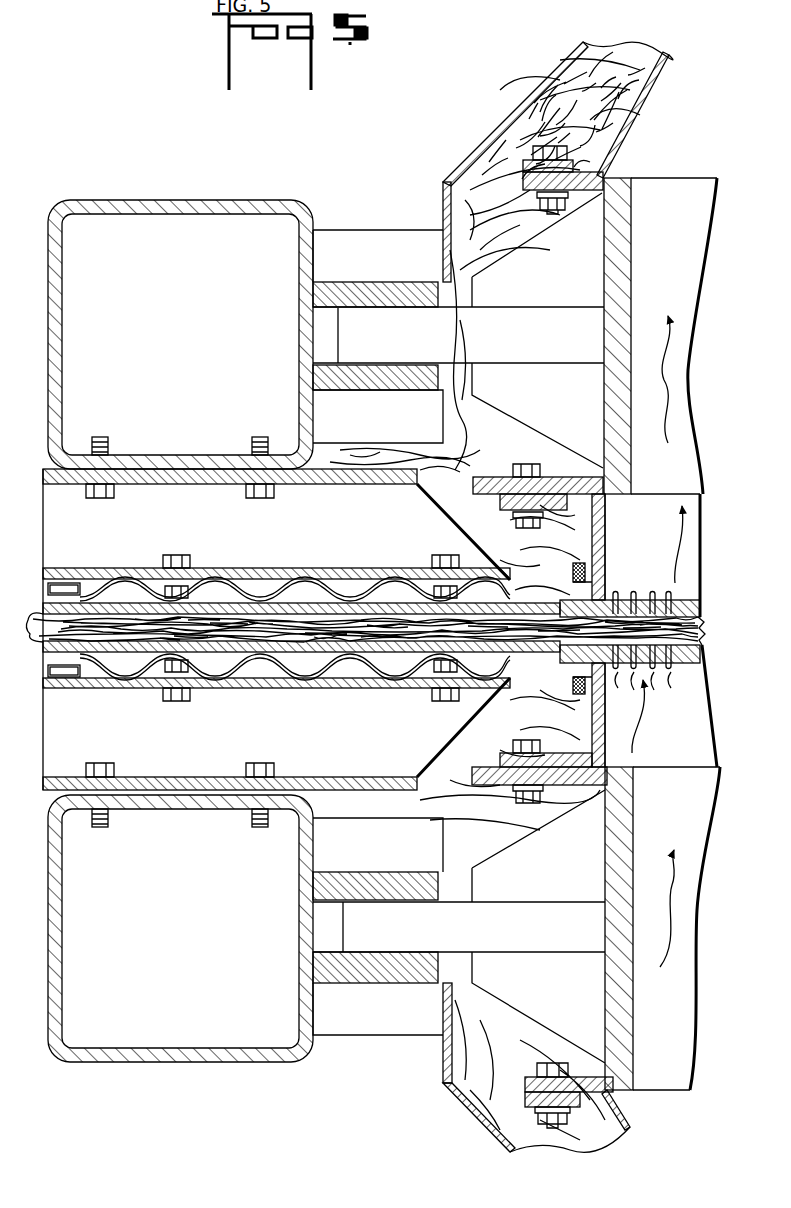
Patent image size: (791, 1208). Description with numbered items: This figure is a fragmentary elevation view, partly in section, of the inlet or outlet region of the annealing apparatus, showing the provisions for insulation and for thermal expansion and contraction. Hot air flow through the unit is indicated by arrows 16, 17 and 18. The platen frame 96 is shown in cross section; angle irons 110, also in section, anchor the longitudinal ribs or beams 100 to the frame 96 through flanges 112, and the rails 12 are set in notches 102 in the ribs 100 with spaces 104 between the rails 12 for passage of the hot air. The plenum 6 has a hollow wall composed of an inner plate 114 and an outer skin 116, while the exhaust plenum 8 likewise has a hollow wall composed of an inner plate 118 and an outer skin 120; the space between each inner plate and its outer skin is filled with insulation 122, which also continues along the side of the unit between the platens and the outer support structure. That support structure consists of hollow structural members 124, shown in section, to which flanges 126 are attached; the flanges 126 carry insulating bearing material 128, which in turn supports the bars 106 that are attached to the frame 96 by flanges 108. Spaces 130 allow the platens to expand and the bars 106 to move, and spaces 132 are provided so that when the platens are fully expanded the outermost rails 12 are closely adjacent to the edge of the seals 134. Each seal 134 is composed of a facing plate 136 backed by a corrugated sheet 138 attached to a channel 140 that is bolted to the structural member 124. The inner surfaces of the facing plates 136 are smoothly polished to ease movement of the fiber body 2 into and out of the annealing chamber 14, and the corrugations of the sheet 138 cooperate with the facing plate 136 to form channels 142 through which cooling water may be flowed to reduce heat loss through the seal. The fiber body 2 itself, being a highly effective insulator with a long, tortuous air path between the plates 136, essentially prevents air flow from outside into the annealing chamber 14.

The fiber body 2 is at (322, 639).
The plenum 6 is at (673, 1129).
The exhaust plenum 8 is at (681, 134).
The rails 12 is at (668, 610).
The annealing chamber 14 is at (707, 625).
The arrow 16 is at (672, 921).
The arrow 17 is at (684, 540).
The arrow 18 is at (666, 372).
The frame 96 is at (632, 277).
The longitudinal ribs 100 is at (675, 552).
The notches 102 is at (675, 668).
The spaces 104 is at (643, 594).
The support bars 106 is at (480, 346).
The flanges 108 is at (560, 291).
The angle irons 110 is at (606, 514).
The flanges 112 is at (577, 475).
The inner plate 114 is at (636, 1128).
The outer skin 116 is at (468, 1118).
The inner plate 118 is at (622, 150).
The outer skin 120 is at (545, 90).
The insulation 122 is at (630, 57).
The hollow structural members 124 is at (170, 204).
The flanges 126 is at (352, 230).
The insulating bearing material 128 is at (315, 375).
The spaces 130 is at (336, 335).
The spaces 132 is at (560, 628).
The seals 134 is at (470, 682).
The facing plate 136 is at (40, 614).
The corrugated sheet 138 is at (371, 627).
The channel 140 is at (215, 531).
The channels 142 is at (145, 590).